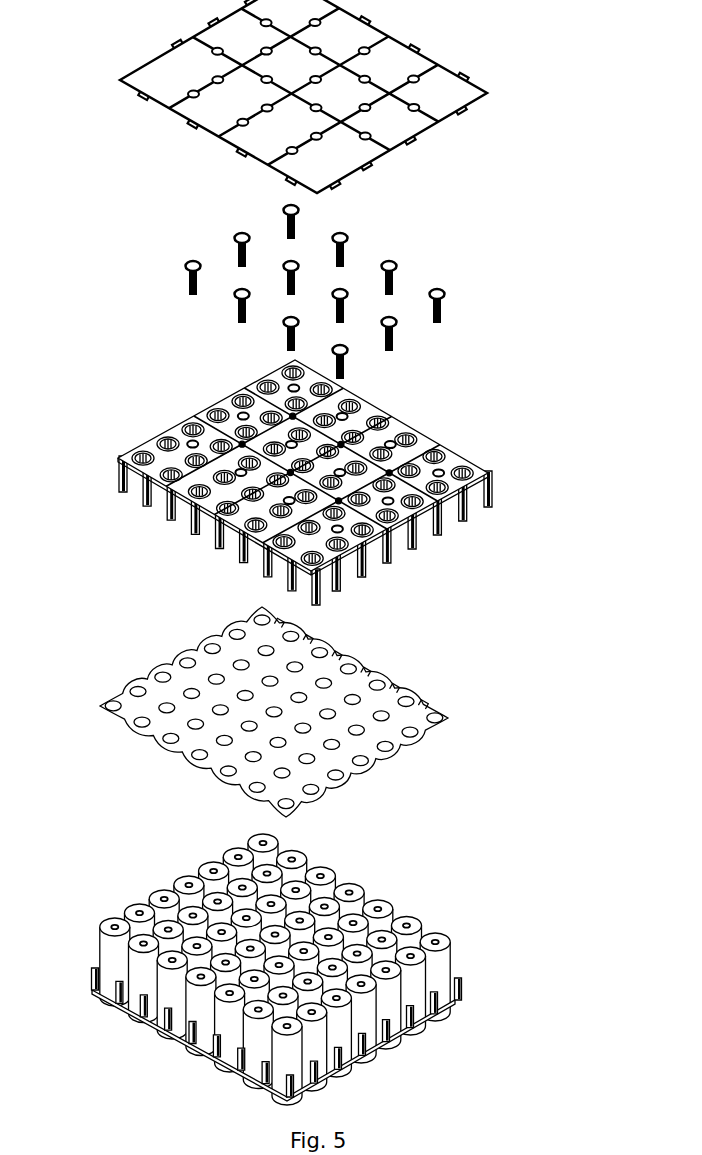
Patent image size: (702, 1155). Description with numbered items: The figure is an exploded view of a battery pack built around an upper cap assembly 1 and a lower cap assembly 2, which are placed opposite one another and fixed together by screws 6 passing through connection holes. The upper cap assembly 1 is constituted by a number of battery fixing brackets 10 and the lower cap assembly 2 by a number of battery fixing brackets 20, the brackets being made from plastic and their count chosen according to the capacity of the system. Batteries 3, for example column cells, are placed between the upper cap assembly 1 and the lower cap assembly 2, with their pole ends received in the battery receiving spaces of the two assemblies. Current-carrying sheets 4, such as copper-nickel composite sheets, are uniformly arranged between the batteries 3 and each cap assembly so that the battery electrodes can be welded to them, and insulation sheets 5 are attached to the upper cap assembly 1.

The upper cap assembly 1 is at (318, 482).
The lower cap assembly 2 is at (457, 985).
The batteries 3 is at (437, 972).
The current-carrying sheets 4 is at (450, 720).
The insulation sheets 5 is at (452, 95).
The screws 6 is at (441, 291).
The battery fixing brackets 10 is at (463, 462).
The battery fixing brackets 20 is at (157, 450).